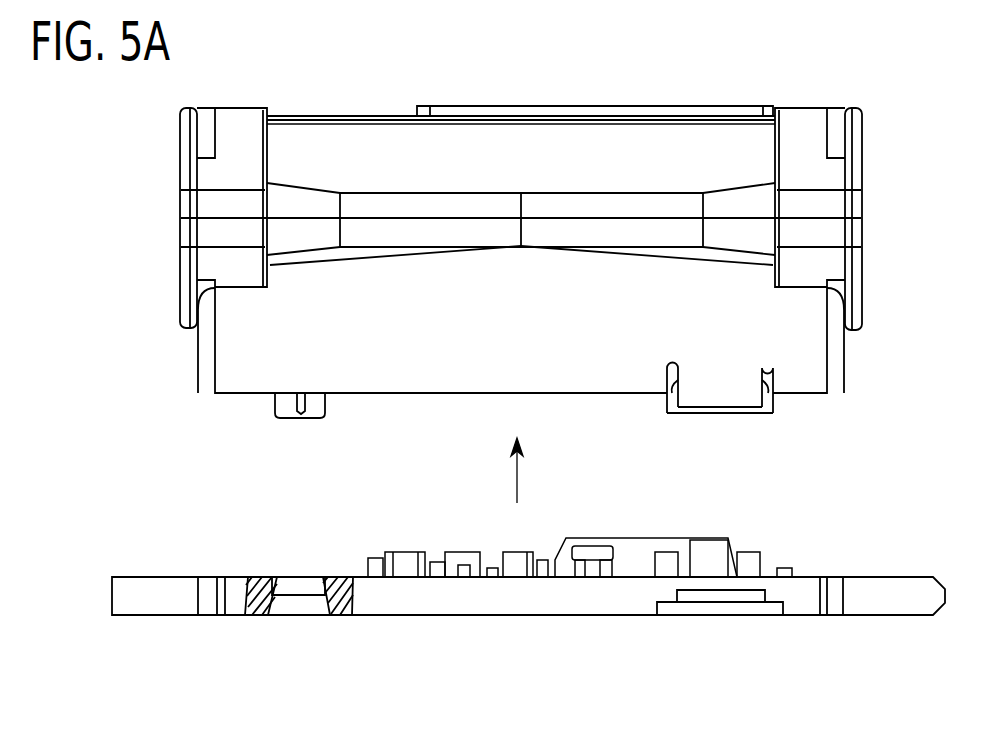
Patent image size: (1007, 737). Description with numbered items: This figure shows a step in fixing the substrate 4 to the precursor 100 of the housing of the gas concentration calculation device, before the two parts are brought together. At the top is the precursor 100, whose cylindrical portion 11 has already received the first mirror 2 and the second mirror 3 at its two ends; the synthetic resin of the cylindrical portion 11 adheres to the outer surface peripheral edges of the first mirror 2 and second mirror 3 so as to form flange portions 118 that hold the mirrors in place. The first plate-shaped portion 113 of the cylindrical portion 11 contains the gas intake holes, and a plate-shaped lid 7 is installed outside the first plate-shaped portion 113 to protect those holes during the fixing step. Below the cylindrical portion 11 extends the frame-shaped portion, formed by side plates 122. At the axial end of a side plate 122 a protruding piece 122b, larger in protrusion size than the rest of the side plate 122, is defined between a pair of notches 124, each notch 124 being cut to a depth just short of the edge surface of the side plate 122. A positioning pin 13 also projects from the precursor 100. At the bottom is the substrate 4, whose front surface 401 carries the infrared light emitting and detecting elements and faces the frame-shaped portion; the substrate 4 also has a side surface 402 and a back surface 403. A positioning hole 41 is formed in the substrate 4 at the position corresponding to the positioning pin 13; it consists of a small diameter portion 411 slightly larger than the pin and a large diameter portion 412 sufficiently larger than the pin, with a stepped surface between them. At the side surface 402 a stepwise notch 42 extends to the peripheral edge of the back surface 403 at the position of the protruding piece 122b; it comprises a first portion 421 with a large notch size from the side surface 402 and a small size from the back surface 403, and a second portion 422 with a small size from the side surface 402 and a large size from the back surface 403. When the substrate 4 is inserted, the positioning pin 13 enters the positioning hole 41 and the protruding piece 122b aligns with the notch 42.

The precursor 100 is at (862, 103).
The first mirror 2 is at (805, 138).
The second mirror 3 is at (240, 138).
The plate-shaped lid 7 is at (589, 113).
The cylindrical portion 11 is at (342, 138).
The first plate-shaped portion 113 is at (377, 117).
The flange portion 118 is at (186, 150).
The side plate 122 is at (245, 348).
The protruding piece 122b is at (720, 383).
The notch 124 is at (675, 384).
The positioning pin 13 is at (302, 418).
The substrate 4 is at (884, 556).
The front surface 401 is at (233, 577).
The side surface 402 is at (513, 596).
The back surface 403 is at (422, 618).
The positioning hole 41 is at (347, 673).
The small diameter portion 411 is at (317, 587).
The large diameter portion 412 is at (327, 603).
The notch 42 is at (775, 673).
The first portion 421 is at (745, 608).
The second portion 422 is at (697, 597).